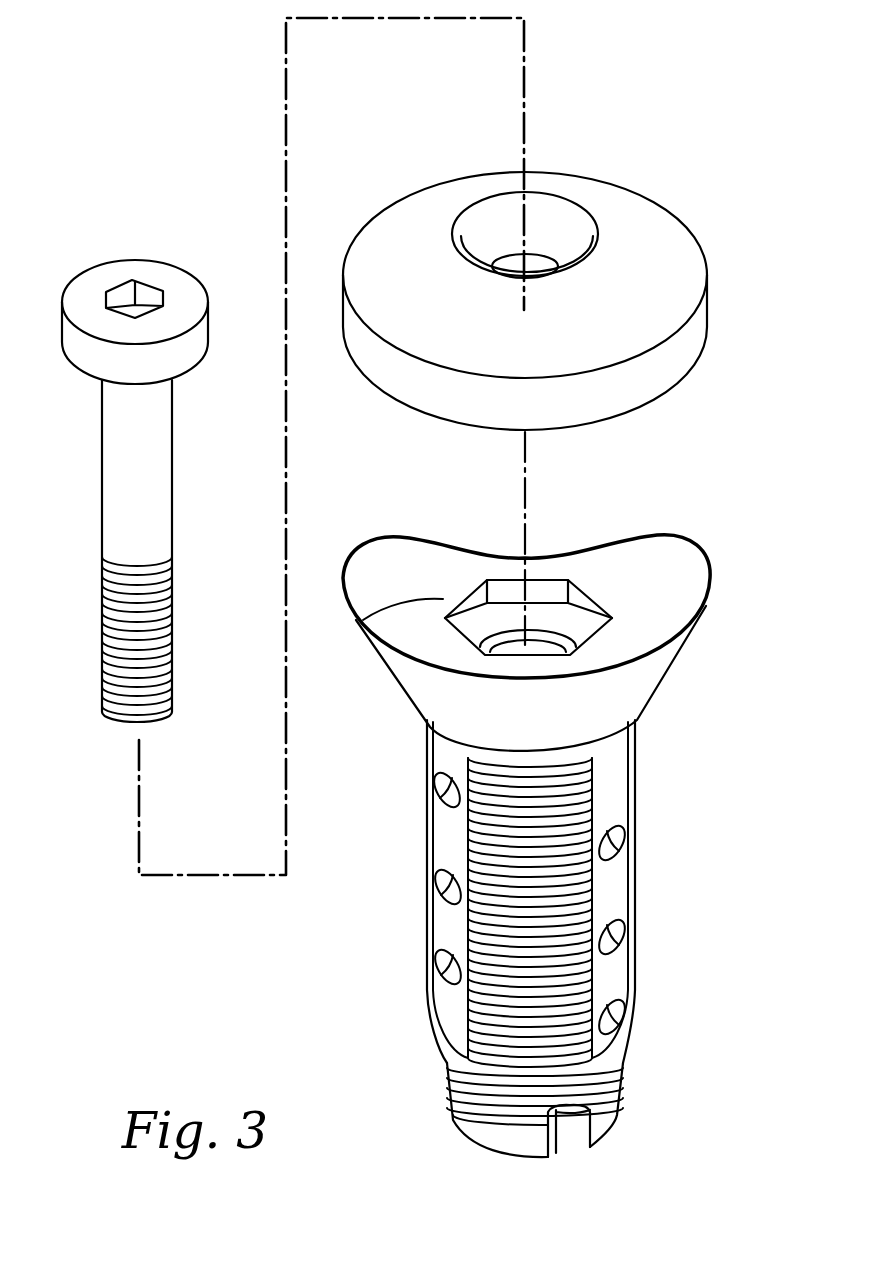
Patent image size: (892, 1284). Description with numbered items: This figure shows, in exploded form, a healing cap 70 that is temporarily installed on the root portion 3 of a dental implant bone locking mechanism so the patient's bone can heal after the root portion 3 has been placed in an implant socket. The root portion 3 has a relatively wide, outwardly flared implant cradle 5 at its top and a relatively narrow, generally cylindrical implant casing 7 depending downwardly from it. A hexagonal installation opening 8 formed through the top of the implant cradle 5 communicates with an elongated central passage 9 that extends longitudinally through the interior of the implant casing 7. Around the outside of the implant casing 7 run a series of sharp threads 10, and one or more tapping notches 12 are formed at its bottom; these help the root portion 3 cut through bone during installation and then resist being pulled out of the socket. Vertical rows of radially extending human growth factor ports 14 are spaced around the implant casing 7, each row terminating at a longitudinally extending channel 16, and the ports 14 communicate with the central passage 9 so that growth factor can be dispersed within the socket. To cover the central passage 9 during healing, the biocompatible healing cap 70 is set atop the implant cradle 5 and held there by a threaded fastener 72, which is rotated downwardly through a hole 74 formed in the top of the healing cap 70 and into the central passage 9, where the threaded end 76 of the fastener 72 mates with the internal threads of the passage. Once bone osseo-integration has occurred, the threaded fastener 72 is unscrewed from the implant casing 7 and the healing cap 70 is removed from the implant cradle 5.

The root portion 3 is at (531, 844).
The implant cradle 5 is at (514, 625).
The implant casing 7 is at (536, 938).
The hexagonal installation opening 8 is at (367, 617).
The central passage 9 is at (540, 645).
The sharp threads 10 is at (487, 1100).
The tapping notch 12 is at (580, 1127).
The human growth factor ports 14 is at (440, 880).
The longitudinally extending channel 16 is at (445, 925).
The healing cap 70 is at (550, 282).
The threaded fastener 72 is at (118, 491).
The hole 74 is at (540, 267).
The threaded end 76 is at (102, 652).